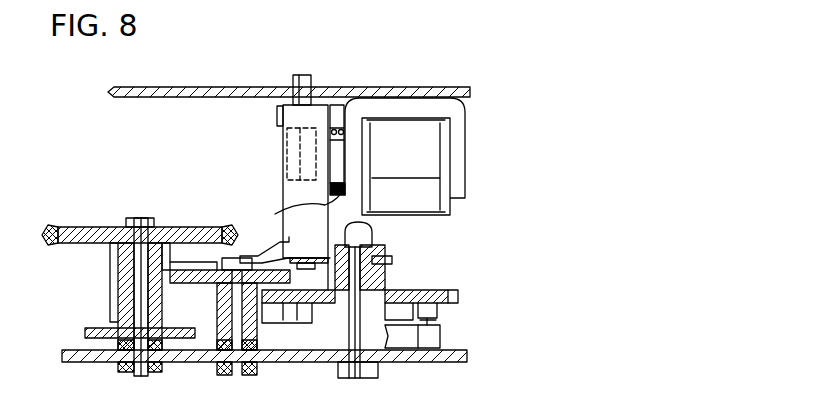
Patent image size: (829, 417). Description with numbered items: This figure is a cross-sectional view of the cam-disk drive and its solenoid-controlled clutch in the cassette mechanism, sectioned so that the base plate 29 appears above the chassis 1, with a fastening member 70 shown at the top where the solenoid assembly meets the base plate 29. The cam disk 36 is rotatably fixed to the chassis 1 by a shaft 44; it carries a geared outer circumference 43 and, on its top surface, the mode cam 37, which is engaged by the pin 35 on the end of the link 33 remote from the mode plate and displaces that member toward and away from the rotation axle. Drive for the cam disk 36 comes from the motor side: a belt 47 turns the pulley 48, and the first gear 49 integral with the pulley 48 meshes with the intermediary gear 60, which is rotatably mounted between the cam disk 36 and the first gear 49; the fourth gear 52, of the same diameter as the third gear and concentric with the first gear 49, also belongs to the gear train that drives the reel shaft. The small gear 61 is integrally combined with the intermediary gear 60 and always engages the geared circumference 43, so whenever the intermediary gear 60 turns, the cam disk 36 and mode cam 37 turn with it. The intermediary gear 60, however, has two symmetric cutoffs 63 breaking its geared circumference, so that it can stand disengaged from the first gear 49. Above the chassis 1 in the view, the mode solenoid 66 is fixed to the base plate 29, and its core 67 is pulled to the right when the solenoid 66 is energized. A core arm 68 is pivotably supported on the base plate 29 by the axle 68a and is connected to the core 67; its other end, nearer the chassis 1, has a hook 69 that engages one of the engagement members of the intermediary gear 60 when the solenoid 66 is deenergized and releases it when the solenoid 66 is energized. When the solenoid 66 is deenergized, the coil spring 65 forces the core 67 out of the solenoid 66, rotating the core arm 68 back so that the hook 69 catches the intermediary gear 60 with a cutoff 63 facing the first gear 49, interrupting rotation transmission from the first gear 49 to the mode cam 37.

The chassis 1 is at (300, 363).
The base plate 29 is at (180, 88).
The link 33 is at (412, 340).
The pin 35 is at (437, 316).
The cam disk 36 is at (408, 290).
The mode cam 37 is at (308, 308).
The geared outer circumference 43 is at (467, 298).
The shaft 44 is at (360, 370).
The belt 47 is at (44, 232).
The pulley 48 is at (89, 227).
The first gear 49 is at (110, 262).
The fourth gear 52 is at (85, 332).
The intermediary gear 60 is at (185, 270).
The small gear 61 is at (214, 305).
The cutoffs 63 is at (168, 280).
The coil spring 65 is at (297, 205).
The mode solenoid 66 is at (440, 178).
The core 67 is at (336, 128).
The core arm 68 is at (290, 183).
The axle 68a is at (336, 300).
The hook 69 is at (228, 230).
The bolt 70 is at (301, 75).